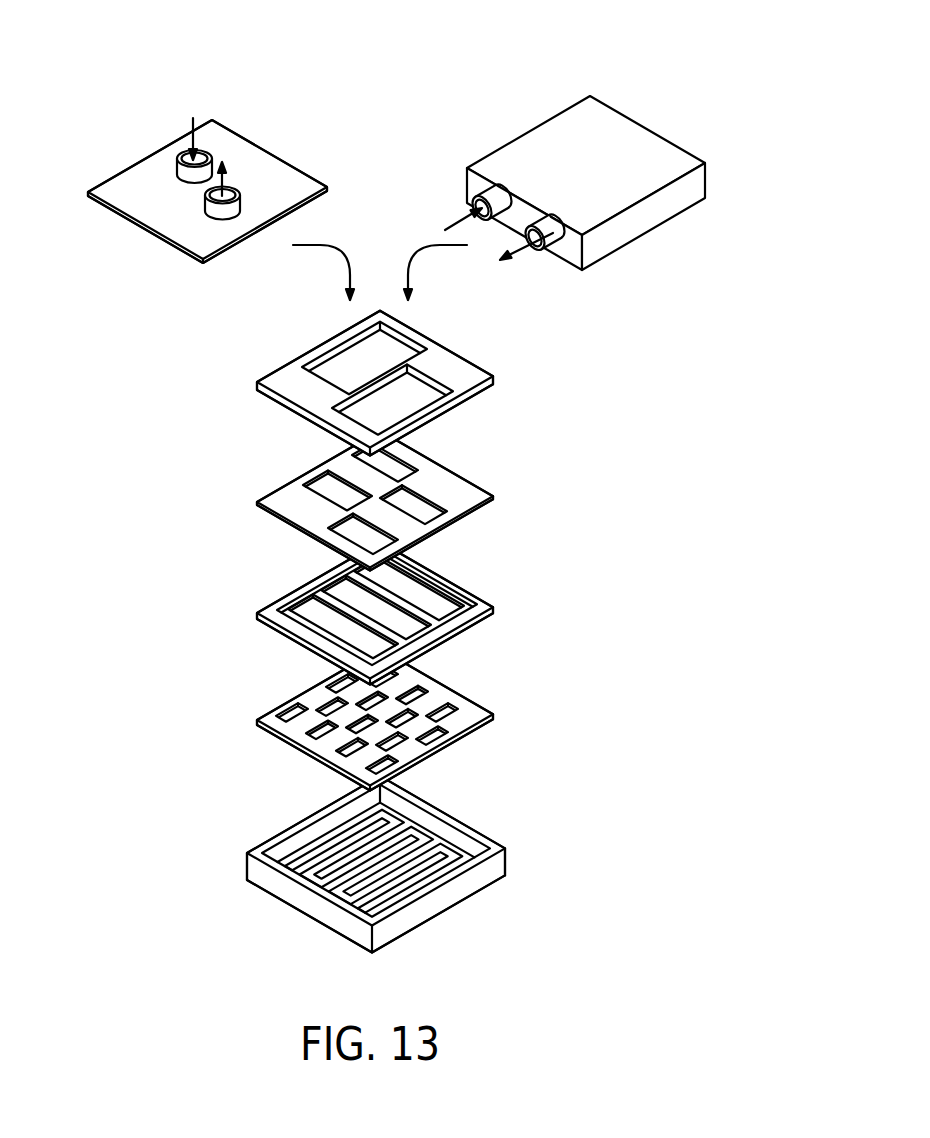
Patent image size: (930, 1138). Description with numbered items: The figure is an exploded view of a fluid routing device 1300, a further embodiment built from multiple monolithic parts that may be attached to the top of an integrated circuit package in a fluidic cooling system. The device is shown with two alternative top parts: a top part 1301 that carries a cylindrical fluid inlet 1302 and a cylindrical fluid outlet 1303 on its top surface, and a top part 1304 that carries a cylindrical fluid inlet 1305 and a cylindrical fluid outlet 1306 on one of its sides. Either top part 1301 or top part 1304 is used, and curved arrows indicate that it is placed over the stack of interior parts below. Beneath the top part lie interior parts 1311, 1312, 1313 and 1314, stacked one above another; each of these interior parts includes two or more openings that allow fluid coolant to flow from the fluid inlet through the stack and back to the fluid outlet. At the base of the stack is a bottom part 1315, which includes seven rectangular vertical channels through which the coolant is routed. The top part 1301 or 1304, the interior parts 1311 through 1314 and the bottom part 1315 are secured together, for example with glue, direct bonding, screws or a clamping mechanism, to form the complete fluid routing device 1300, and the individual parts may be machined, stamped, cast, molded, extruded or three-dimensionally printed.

The fluid routing device 1300 is at (302, 45).
The top part 1301 is at (116, 172).
The cylindrical fluid inlet 1302 is at (210, 152).
The cylindrical fluid outlet 1303 is at (267, 188).
The top part 1304 is at (512, 143).
The cylindrical fluid inlet 1305 is at (503, 200).
The cylindrical fluid outlet 1306 is at (555, 233).
The interior part 1311 is at (277, 370).
The interior part 1312 is at (277, 487).
The interior part 1313 is at (277, 602).
The interior part 1314 is at (272, 710).
The bottom part 1315 is at (275, 838).